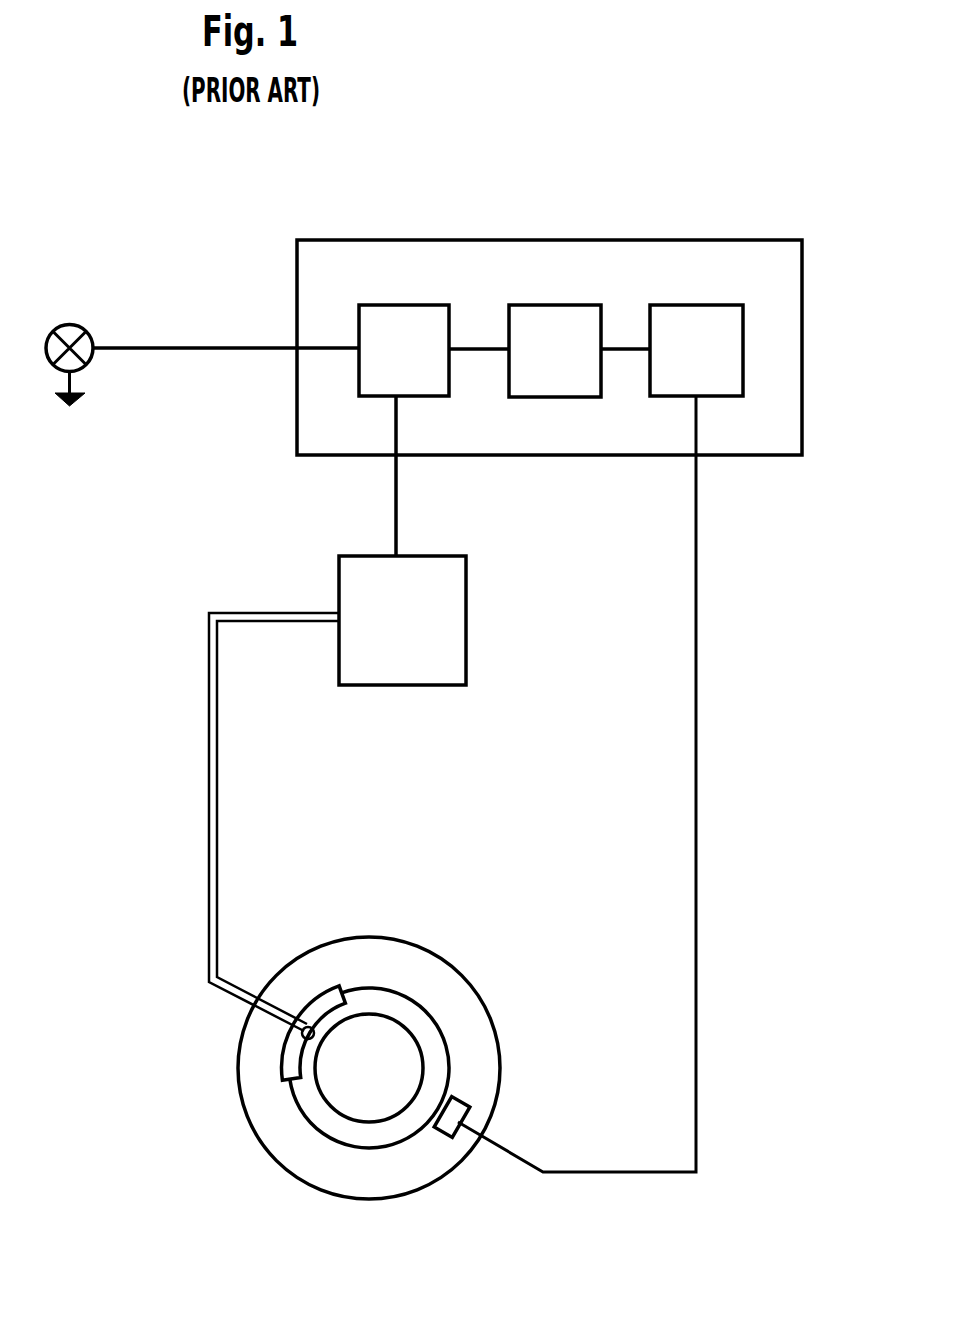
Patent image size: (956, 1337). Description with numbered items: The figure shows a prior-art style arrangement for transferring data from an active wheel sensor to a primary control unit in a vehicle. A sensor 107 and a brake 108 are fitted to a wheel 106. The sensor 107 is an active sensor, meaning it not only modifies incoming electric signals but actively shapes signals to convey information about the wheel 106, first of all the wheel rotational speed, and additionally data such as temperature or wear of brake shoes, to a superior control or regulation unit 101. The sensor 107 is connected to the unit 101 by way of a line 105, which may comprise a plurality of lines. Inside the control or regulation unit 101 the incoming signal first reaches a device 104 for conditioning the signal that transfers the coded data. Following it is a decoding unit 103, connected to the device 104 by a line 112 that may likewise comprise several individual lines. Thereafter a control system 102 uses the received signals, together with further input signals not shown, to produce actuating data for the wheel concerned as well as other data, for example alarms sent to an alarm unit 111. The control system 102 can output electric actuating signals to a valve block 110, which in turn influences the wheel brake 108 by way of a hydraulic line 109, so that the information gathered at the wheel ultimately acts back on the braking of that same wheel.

The control or regulation unit 101 is at (458, 266).
The control system 102 is at (396, 323).
The decoding unit 103 is at (543, 325).
The device for conditioning a signal 104 is at (689, 325).
The line 105 is at (700, 813).
The wheel 106 is at (285, 1142).
The sensor 107 is at (452, 1118).
The brake 108 is at (292, 1058).
The hydraulic line 109 is at (209, 807).
The valve block 110 is at (437, 637).
The alarm unit 111 is at (66, 330).
The line 112 is at (619, 345).